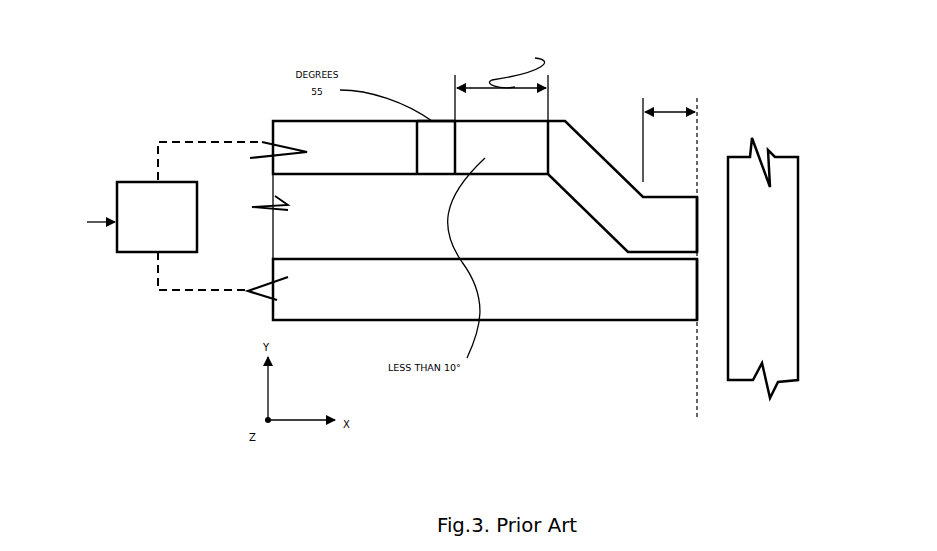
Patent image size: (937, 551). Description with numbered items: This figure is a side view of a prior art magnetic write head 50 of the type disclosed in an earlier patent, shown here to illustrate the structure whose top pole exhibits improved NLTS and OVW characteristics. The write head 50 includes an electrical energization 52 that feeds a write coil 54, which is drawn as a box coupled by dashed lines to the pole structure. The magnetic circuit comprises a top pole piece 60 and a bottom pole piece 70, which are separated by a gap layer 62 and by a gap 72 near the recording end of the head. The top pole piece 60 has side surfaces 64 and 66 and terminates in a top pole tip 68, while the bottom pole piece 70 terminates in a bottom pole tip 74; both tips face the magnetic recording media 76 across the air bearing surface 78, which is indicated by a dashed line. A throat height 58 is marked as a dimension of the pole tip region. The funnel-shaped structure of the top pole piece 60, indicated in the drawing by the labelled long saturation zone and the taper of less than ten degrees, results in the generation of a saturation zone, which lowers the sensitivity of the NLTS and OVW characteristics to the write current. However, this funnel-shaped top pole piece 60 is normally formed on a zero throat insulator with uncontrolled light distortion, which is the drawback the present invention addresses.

The write head 50 is at (233, 386).
The electrical energization 52 is at (96, 221).
The write coil 54 is at (135, 252).
The throat height 58 is at (665, 112).
The top pole piece 60 is at (667, 222).
The gap layer 62 is at (283, 190).
The side surface 64 is at (440, 158).
The side surface 66 is at (510, 158).
The top pole tip 68 is at (697, 220).
The bottom pole piece 70 is at (637, 290).
The gap 72 is at (665, 254).
The bottom pole tip 74 is at (697, 290).
The magnetic recording media 76 is at (776, 335).
The air bearing surface (ABS) 78 is at (700, 398).